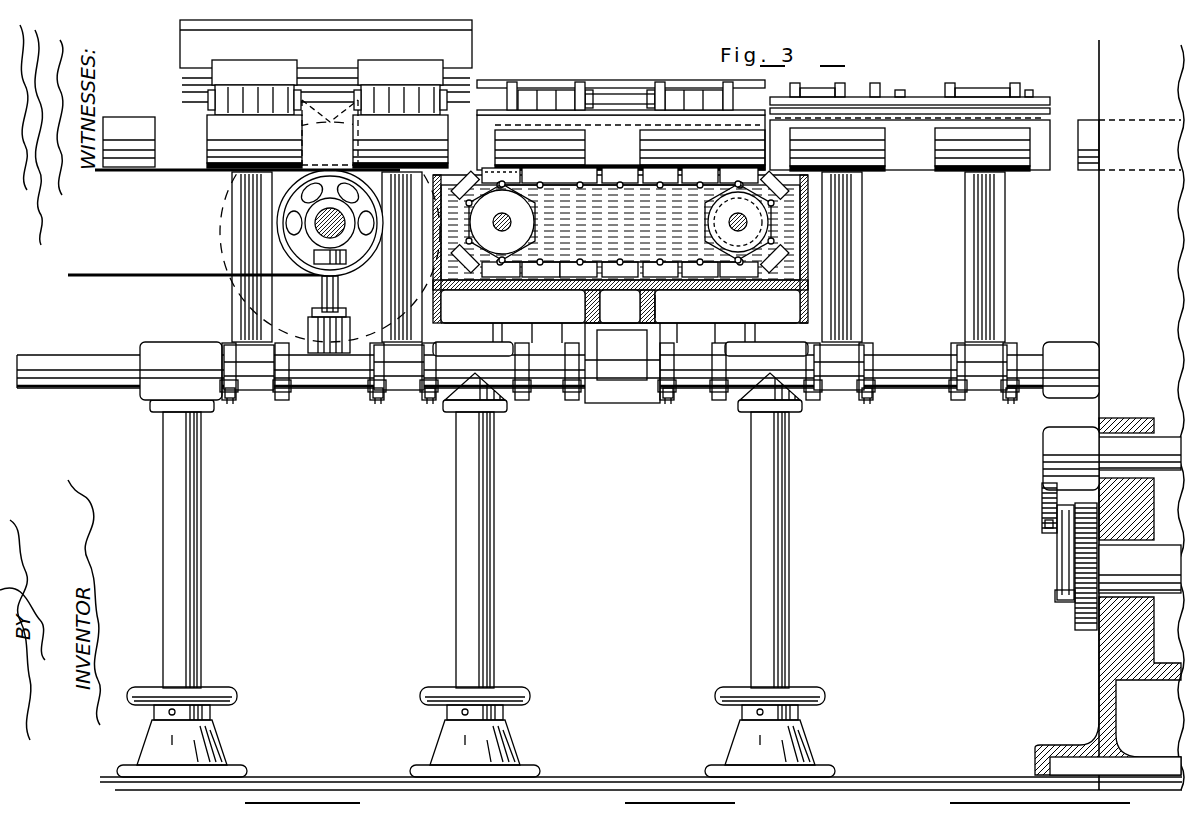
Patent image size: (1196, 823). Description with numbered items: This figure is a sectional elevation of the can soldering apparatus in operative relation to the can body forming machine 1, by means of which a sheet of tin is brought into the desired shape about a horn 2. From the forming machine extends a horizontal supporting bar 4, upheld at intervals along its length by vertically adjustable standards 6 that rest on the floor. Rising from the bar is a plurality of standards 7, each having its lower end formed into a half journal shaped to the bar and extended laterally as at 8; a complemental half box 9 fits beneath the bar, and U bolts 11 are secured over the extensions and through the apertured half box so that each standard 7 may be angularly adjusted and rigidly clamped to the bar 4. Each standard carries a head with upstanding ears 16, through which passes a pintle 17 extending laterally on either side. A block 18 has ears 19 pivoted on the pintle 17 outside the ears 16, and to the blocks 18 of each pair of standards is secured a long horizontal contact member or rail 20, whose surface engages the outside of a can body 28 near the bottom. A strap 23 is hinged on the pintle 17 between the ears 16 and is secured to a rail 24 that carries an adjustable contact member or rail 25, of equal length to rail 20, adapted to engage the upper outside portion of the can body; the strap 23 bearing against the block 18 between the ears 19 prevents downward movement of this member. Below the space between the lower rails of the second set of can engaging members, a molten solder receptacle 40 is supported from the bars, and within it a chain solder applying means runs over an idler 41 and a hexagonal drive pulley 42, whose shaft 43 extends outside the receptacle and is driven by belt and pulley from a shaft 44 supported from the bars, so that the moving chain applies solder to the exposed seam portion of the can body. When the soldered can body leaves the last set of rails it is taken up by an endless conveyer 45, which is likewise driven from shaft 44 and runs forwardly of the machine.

The can body forming machine 1 is at (1110, 240).
The horn 2 is at (1090, 130).
The supporting bar 4 is at (95, 368).
The vertically adjustable standard 6 is at (192, 598).
The standard 7 is at (258, 292).
The half journal extension 8 is at (245, 358).
The complemental half box 9 is at (250, 398).
The U bolt 11 is at (378, 400).
The upstanding ears 16 is at (565, 94).
The pintle 17 is at (330, 135).
The block 18 is at (368, 70).
The ears of block 19 is at (580, 82).
The contact member or rail 20 is at (195, 45).
The strap 23 is at (245, 117).
The rail 24 is at (183, 96).
The adjustable contact member or rail 25 is at (183, 81).
The can body 28 is at (130, 155).
The molten solder receptacle 40 is at (626, 235).
The idler 41 is at (503, 245).
The hexagonal drive pulley 42 is at (748, 240).
The shaft of drive pulley 43 is at (730, 240).
The shaft 44 is at (318, 228).
The endless conveyer 45 is at (102, 280).